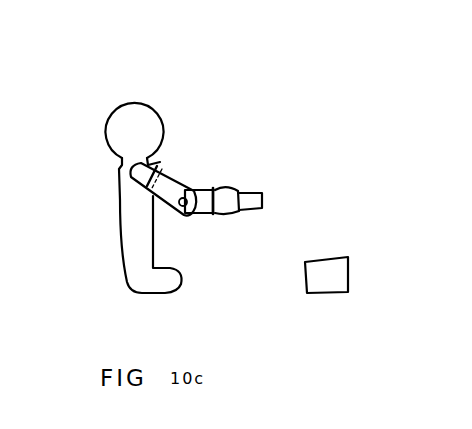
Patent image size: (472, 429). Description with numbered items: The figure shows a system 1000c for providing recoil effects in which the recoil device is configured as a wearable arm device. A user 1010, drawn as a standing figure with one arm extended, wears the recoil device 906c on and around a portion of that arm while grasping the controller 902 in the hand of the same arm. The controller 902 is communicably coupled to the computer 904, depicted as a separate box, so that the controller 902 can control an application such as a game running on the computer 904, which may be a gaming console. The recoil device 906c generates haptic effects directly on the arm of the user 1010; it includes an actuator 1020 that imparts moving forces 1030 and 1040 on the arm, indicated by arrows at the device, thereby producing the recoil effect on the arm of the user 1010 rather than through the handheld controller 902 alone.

The system for providing recoil effects 1000c is at (207, 55).
The user 1010 is at (117, 120).
The recoil device 906c is at (165, 184).
The moving force 1040 is at (162, 209).
The actuator 1020 is at (190, 207).
The moving force 1030 is at (207, 190).
The controller 902 is at (262, 192).
The computer 904 is at (338, 285).